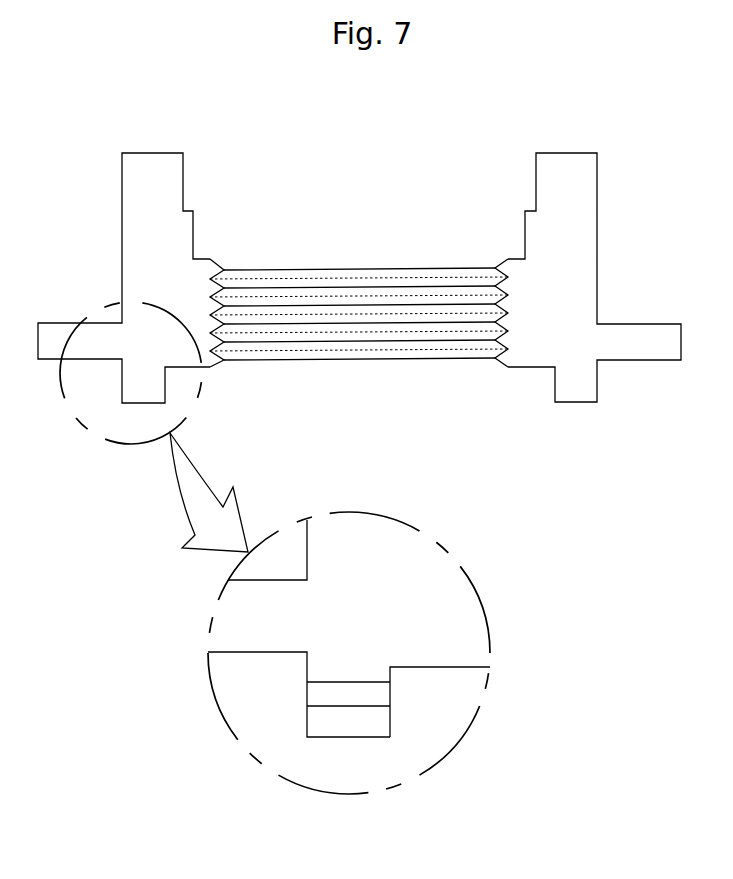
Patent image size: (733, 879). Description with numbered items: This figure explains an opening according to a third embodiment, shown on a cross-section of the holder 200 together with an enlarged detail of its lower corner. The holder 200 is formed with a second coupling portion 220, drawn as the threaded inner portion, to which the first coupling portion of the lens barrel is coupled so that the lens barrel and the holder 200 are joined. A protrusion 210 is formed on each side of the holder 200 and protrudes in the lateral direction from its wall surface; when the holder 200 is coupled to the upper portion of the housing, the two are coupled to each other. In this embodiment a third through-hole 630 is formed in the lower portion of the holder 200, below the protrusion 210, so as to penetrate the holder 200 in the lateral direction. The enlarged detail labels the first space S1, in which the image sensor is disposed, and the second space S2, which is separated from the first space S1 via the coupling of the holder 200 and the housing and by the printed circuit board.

The holder 200 is at (359, 257).
The protrusion 210 is at (66, 333).
The second coupling portion 220 is at (368, 352).
The third through-hole 630 is at (353, 695).
The first space S1 is at (439, 699).
The second space S2 is at (262, 691).